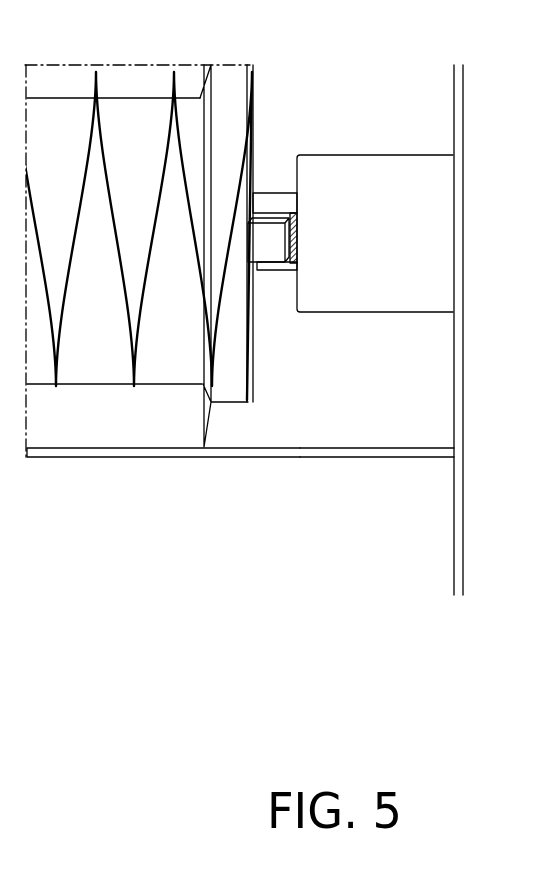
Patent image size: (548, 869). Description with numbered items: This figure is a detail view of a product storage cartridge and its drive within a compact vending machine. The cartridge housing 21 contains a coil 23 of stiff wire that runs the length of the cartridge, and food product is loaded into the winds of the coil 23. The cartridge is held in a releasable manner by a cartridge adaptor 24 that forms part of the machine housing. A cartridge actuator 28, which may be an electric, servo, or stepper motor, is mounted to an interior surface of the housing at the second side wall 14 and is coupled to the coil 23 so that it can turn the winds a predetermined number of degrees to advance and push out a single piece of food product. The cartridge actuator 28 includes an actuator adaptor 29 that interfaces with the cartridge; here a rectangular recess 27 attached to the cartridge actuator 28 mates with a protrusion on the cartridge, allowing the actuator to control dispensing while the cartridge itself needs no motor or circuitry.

The second side wall 14 is at (457, 333).
The cartridge housing 21 is at (130, 427).
The coil 23 is at (113, 132).
The cartridge adaptor 24 is at (383, 447).
The rectangular recess 27 is at (287, 213).
The cartridge actuator 28 is at (390, 155).
The actuator adaptor 29 is at (270, 272).